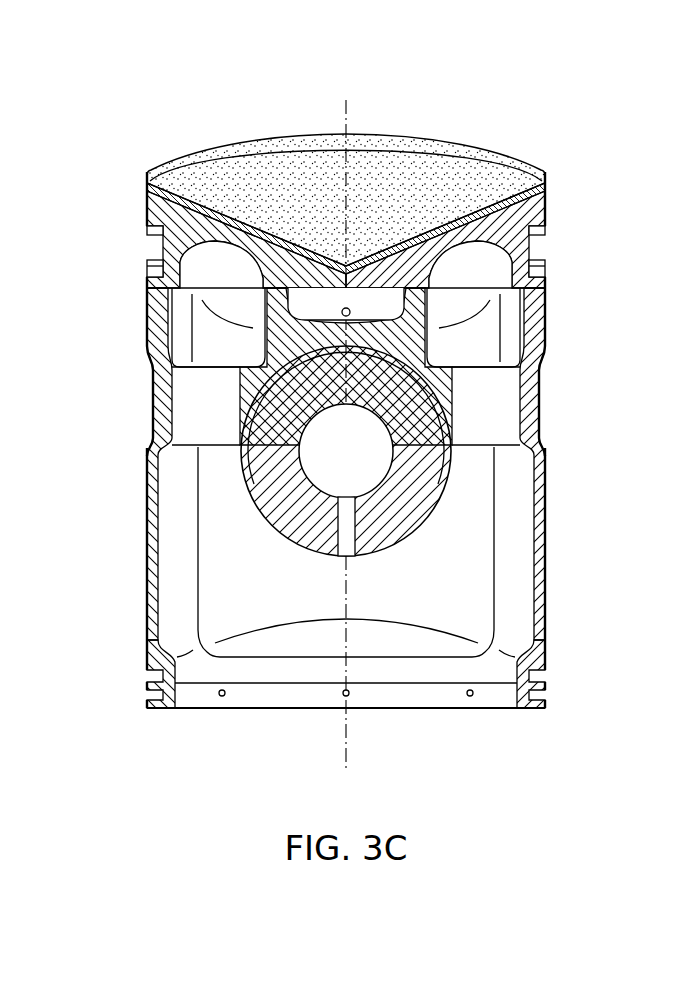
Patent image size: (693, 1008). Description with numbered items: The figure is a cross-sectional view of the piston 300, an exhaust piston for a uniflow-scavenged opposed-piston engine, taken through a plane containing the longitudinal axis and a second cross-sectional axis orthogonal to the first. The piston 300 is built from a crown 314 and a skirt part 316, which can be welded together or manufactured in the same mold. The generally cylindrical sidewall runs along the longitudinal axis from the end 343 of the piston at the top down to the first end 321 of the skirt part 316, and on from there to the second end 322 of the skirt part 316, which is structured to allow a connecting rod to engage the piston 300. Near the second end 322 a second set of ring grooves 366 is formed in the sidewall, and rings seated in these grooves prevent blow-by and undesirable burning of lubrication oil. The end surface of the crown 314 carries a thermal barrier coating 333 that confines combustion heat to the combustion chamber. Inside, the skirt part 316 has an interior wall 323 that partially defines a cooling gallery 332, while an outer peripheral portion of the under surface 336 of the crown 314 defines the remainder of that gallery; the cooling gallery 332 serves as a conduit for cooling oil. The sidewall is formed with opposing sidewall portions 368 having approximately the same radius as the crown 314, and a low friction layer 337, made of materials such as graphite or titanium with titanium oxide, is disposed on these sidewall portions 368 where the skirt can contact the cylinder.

The piston 300 is at (490, 131).
The crown 314 is at (250, 170).
The end of the piston 343 is at (145, 183).
The thermal barrier coating 333 is at (550, 183).
The under surface of the crown 336 is at (143, 239).
The cooling gallery 332 is at (197, 272).
The first end of the skirt part 321 is at (553, 290).
The low friction layer 337 is at (145, 326).
The interior wall 323 is at (462, 397).
The skirt part 316 is at (118, 440).
The sidewall portions 368 is at (147, 520).
The second set of ring grooves 366 is at (556, 660).
The second end of the skirt part 322 is at (405, 723).